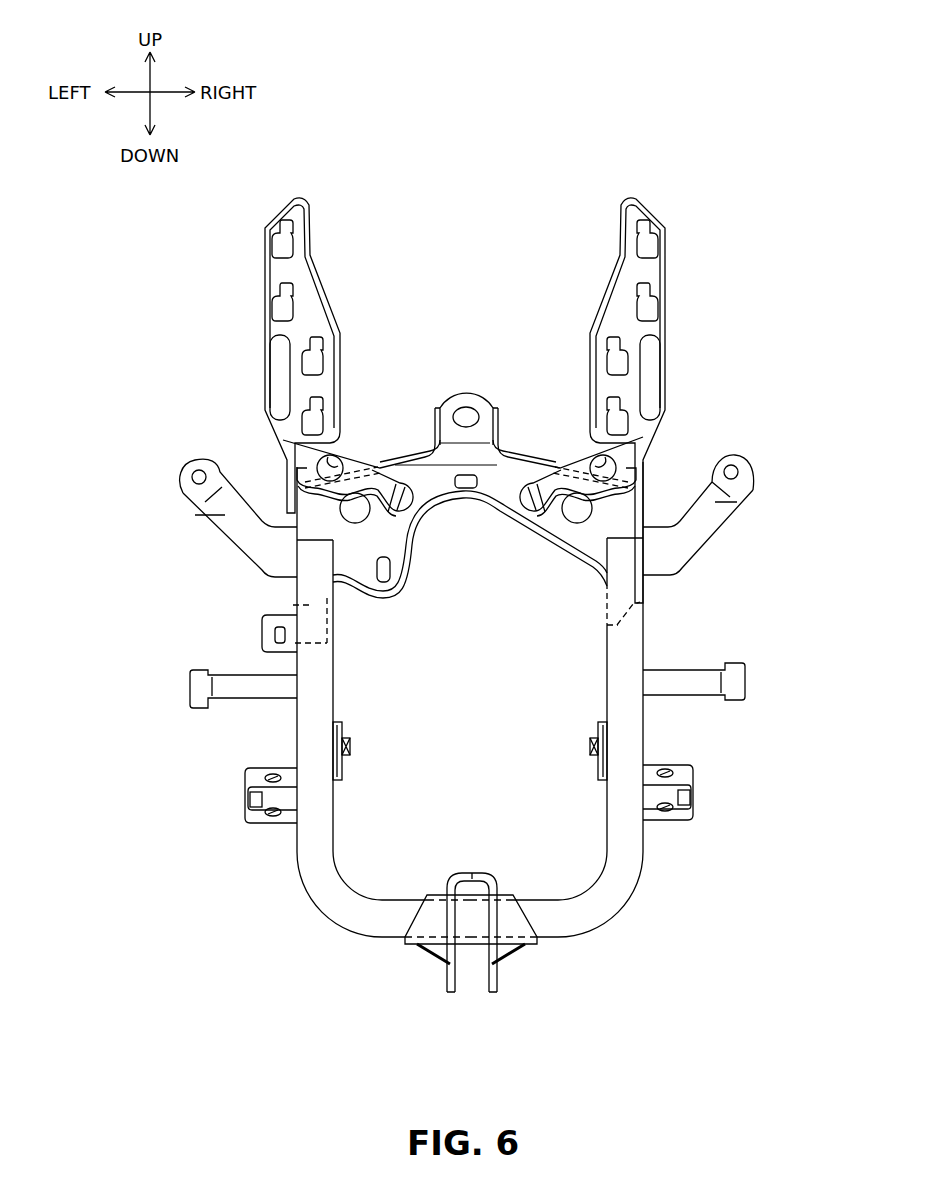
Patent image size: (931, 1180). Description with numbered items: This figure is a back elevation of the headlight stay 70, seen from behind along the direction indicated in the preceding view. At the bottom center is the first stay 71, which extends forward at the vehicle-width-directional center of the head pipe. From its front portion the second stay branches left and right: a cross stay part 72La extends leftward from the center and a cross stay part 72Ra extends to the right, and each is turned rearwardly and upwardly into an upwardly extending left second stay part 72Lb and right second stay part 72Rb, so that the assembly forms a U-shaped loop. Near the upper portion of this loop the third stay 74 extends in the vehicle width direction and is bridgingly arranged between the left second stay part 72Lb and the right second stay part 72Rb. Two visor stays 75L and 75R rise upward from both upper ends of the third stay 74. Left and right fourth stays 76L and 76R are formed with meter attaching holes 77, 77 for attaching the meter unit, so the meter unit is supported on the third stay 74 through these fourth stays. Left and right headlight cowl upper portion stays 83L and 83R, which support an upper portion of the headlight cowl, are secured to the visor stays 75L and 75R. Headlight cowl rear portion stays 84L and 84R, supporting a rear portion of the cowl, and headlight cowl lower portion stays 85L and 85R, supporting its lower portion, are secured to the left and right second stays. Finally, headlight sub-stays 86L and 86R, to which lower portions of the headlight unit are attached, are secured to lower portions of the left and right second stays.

The headlight stay 70 is at (584, 245).
The first stay 71 is at (452, 996).
The cross stay part 72La is at (385, 930).
The cross stay part 72Ra is at (548, 930).
The left second stay part 72Lb is at (300, 658).
The right second stay part 72Rb is at (632, 627).
The third stay 74 is at (445, 462).
The visor stay 75L is at (272, 275).
The visor stay 75R is at (650, 270).
The fourth stay 76L is at (380, 460).
The fourth stay 76R is at (551, 462).
The meter attaching hole 77 is at (345, 458).
The headlight cowl upper portion stay 83L is at (225, 512).
The headlight cowl upper portion stay 83R is at (720, 512).
The headlight cowl rear portion stay 84L is at (232, 680).
The headlight cowl rear portion stay 84R is at (700, 684).
The headlight cowl lower portion stay 85L is at (258, 772).
The headlight cowl lower portion stay 85R is at (684, 768).
The headlight sub-stay 86L is at (350, 746).
The headlight sub-stay 86R is at (589, 746).